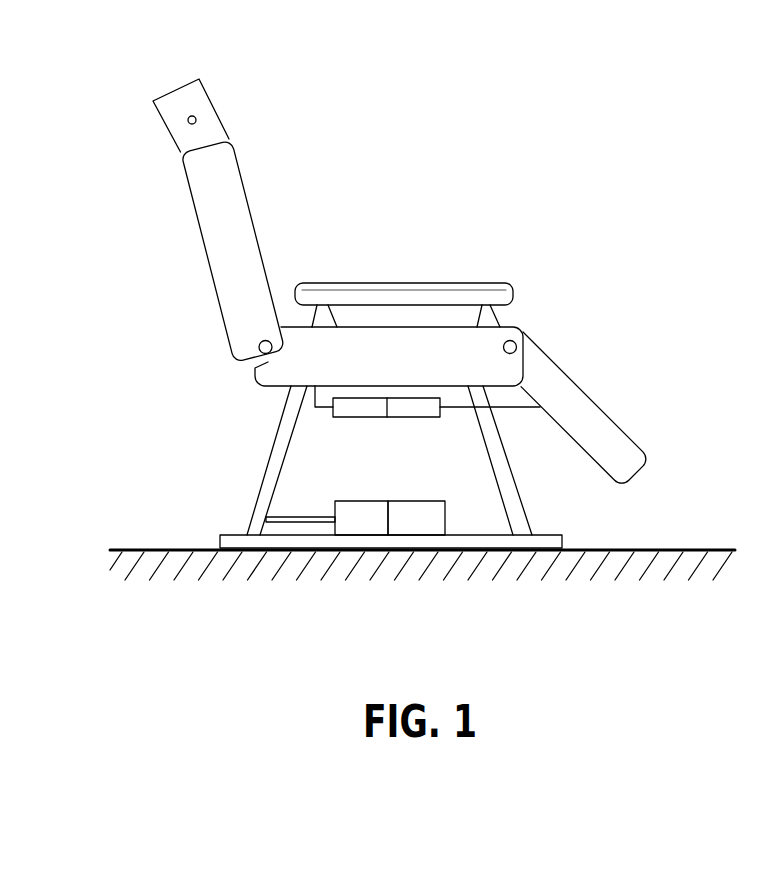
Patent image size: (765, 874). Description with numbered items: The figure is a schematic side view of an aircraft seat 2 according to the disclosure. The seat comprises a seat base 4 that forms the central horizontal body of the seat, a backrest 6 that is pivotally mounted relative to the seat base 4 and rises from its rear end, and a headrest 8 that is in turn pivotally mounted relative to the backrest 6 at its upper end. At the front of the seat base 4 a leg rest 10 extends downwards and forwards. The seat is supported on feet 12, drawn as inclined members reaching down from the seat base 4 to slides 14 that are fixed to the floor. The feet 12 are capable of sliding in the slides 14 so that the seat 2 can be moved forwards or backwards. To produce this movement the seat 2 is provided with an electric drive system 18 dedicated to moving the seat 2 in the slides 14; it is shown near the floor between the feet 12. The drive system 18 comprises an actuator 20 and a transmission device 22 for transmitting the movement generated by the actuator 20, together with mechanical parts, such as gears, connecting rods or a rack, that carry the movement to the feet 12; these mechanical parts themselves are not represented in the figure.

The aircraft seat 2 is at (97, 606).
The seat base 4 is at (396, 368).
The backrest 6 is at (233, 218).
The headrest 8 is at (207, 132).
The leg rest 10 is at (570, 400).
The feet 12 is at (267, 483).
The slides 14 is at (560, 550).
The electric drive system 18 is at (428, 553).
The actuator 20 is at (420, 522).
The transmission device 22 is at (365, 518).